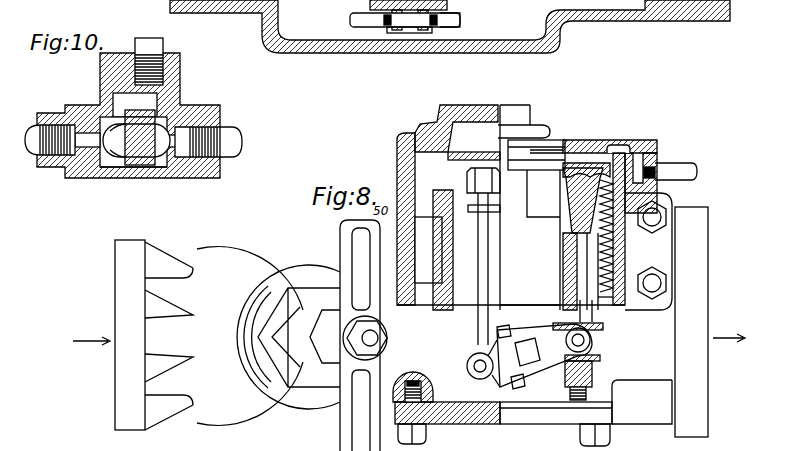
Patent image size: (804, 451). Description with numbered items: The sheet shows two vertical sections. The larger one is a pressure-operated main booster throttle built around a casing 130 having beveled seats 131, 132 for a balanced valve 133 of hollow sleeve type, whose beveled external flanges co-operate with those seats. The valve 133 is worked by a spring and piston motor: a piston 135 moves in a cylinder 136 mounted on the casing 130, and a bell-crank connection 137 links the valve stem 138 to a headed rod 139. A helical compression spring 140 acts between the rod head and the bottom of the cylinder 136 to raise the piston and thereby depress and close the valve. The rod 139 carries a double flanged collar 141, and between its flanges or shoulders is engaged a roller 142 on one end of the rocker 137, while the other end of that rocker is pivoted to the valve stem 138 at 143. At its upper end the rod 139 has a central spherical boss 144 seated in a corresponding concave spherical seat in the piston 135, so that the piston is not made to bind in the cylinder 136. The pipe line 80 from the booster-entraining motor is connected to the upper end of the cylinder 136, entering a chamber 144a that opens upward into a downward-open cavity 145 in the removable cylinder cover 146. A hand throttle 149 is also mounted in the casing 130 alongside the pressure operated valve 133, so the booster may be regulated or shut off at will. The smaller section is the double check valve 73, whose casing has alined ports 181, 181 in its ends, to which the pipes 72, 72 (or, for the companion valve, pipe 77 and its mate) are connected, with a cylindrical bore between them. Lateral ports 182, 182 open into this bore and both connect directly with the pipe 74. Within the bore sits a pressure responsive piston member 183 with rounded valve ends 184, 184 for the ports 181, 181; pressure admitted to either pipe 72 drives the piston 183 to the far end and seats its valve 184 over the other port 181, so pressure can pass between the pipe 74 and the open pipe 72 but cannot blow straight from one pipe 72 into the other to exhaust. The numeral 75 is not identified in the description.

In FIG. 10, the pipe 72 is at (33, 125).
In FIG. 10, the double check valve 73 is at (158, 172).
In FIG. 10, the pipe 74 is at (162, 48).
In FIG. 8, the rod 75 is at (458, 21).
In FIG. 8, the pipe 77 is at (356, 21).
In FIG. 8, the pipe line 80 is at (688, 170).
In FIG. 8, the casing 130 is at (406, 145).
In FIG. 8, the beveled seat 131 is at (423, 208).
In FIG. 8, the beveled seat 132 is at (432, 281).
In FIG. 8, the balanced valve 133 is at (446, 249).
In FIG. 8, the piston 135 is at (588, 167).
In FIG. 8, the cylinder 136 is at (625, 242).
In FIG. 8, the bell-crank connection 137 is at (538, 368).
In FIG. 8, the valve stem 138 is at (478, 330).
In FIG. 8, the headed rod 139 is at (577, 317).
In FIG. 8, the helical compression spring 140 is at (614, 300).
In FIG. 8, the double flanged collar 141 is at (620, 368).
In FIG. 8, the roller 142 is at (593, 343).
In FIG. 8, the pivot 143 is at (467, 365).
In FIG. 8, the spherical boss 144 is at (580, 180).
In FIG. 8, the chamber 144a is at (643, 140).
In FIG. 8, the cavity 145 is at (620, 146).
In FIG. 8, the cylinder cover 146 is at (654, 142).
In FIG. 8, the hand throttle 149 is at (333, 362).
In FIG. 10, the port 181 is at (80, 118).
In FIG. 10, the lateral port 182 is at (118, 80).
In FIG. 10, the piston member 183 is at (137, 172).
In FIG. 10, the valve end 184 is at (110, 155).